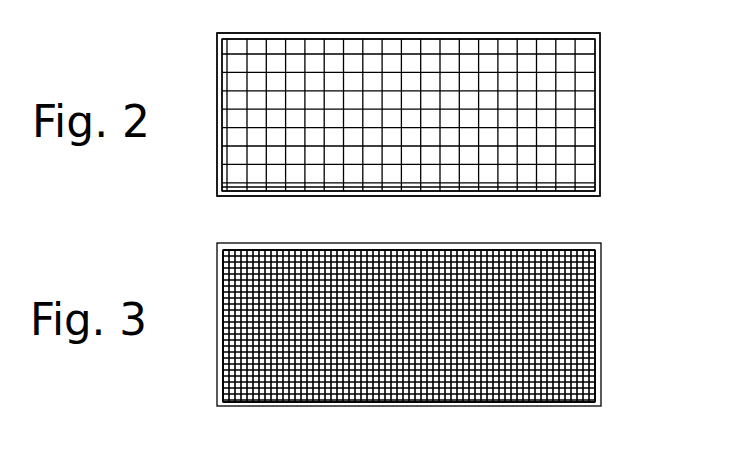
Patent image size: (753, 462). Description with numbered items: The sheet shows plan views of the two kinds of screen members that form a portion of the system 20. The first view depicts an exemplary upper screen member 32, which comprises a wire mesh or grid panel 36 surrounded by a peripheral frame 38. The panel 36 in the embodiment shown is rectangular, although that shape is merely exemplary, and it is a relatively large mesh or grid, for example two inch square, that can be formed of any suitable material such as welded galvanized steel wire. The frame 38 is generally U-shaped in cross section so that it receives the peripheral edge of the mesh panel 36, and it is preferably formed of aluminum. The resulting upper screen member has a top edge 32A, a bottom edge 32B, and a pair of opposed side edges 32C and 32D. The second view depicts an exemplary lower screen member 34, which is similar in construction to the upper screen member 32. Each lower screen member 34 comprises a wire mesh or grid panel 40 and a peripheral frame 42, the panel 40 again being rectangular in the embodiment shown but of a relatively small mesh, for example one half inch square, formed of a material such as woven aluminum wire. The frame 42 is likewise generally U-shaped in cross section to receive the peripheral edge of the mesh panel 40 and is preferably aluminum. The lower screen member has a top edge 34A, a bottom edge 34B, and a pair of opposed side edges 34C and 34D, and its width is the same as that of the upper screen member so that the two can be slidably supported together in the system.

In FIG. 2, the filter assembly 20 is at (365, 98).
In FIG. 2, the upper screen member 32 is at (447, 113).
In FIG. 2, the top edge 32A is at (305, 35).
In FIG. 2, the bottom edge 32B is at (573, 195).
In FIG. 2, the side edge 32C is at (602, 133).
In FIG. 2, the side edge 32D is at (218, 117).
In FIG. 2, the wire mesh or grid panel 36 is at (518, 108).
In FIG. 2, the peripheral frame 38 is at (600, 170).
In FIG. 3, the lower screen member 34 is at (443, 326).
In FIG. 3, the top edge 34A is at (303, 247).
In FIG. 3, the bottom edge 34B is at (565, 405).
In FIG. 3, the side edge 34C is at (597, 338).
In FIG. 3, the side edge 34D is at (220, 290).
In FIG. 3, the wire mesh or grid panel 40 is at (527, 298).
In FIG. 3, the peripheral frame 42 is at (598, 377).